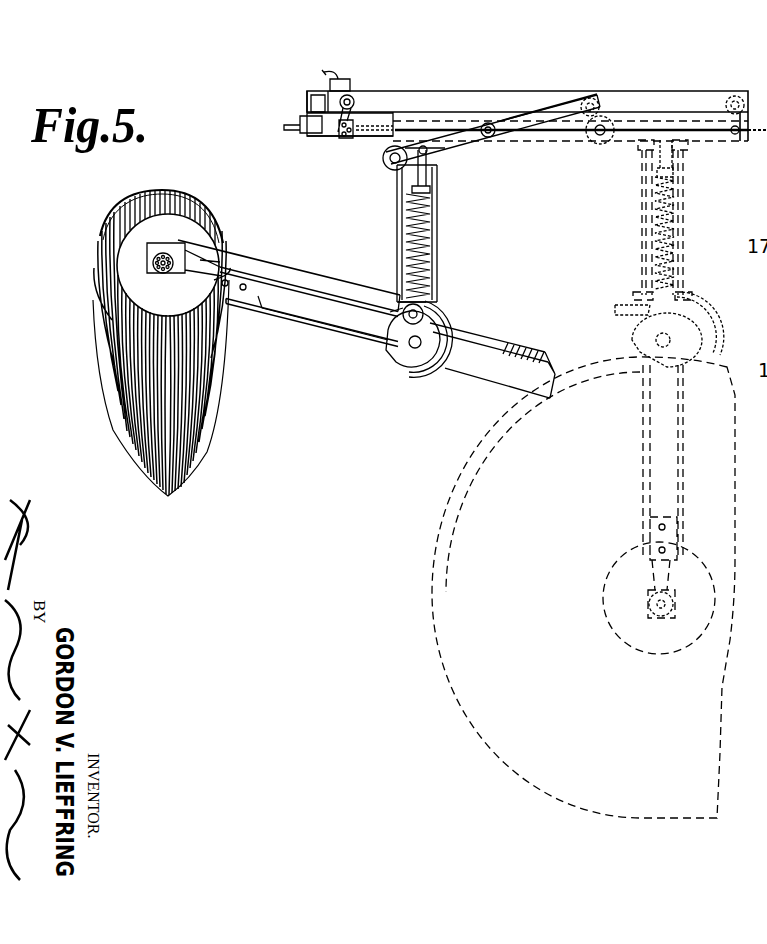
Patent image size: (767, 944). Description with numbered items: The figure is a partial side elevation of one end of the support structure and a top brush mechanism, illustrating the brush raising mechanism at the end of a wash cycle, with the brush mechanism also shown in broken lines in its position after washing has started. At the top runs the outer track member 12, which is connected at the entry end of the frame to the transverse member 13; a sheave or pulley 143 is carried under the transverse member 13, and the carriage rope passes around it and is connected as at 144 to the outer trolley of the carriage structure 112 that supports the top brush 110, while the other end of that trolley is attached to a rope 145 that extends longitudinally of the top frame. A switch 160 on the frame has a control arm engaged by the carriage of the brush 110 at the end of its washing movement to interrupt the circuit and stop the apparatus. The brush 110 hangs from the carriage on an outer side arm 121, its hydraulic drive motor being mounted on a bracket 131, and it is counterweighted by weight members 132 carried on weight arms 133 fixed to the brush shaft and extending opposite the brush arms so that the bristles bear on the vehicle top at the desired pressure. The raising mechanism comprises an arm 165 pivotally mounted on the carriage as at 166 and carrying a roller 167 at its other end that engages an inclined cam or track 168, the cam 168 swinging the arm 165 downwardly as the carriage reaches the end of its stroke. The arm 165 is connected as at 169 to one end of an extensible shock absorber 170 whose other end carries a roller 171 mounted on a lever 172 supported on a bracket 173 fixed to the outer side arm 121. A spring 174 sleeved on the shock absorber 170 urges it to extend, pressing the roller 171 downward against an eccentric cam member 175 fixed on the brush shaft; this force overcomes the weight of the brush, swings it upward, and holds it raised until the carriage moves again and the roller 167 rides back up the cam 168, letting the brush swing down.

The outer track member 12 is at (629, 91).
The transverse member 13 is at (308, 91).
The top brush 110 is at (94, 338).
The carriage structure 112 is at (385, 138).
The outer side arm 121 is at (685, 397).
The bracket 131 is at (241, 303).
The weight member 132 is at (526, 348).
The weight arm 133 is at (486, 366).
The sheave or pulley 143 is at (292, 130).
The rope connection 144 is at (339, 132).
The rope 145 is at (372, 136).
The switch 160 is at (341, 79).
The arm 165 is at (496, 132).
The pivot 166 is at (580, 147).
The roller 167 is at (392, 171).
The inclined cam or track 168 is at (511, 91).
The connection 169 is at (436, 148).
The shock absorber 170 is at (423, 192).
The roller 171 is at (440, 320).
The lever 172 is at (375, 338).
The bracket 173 is at (404, 306).
The spring 174 is at (426, 258).
The eccentric cam member 175 is at (404, 370).